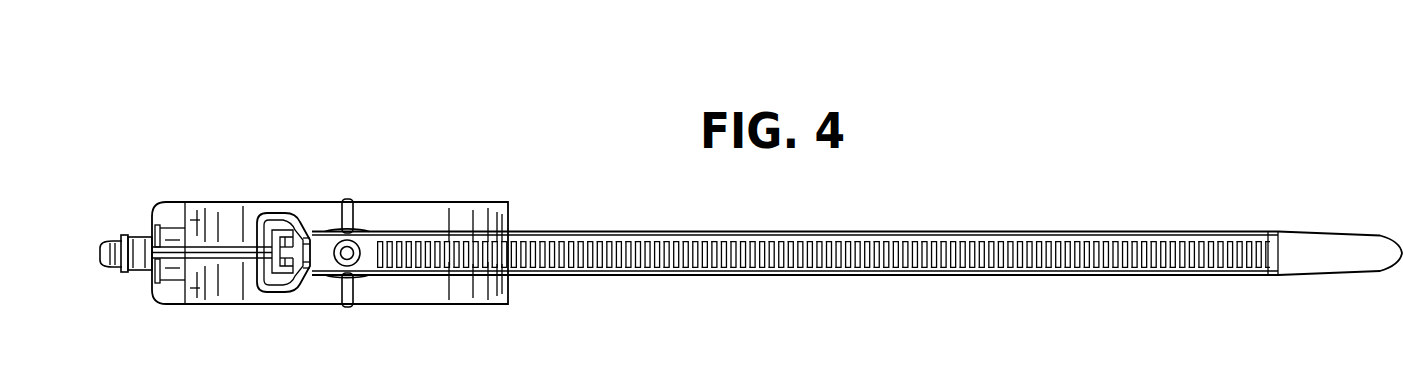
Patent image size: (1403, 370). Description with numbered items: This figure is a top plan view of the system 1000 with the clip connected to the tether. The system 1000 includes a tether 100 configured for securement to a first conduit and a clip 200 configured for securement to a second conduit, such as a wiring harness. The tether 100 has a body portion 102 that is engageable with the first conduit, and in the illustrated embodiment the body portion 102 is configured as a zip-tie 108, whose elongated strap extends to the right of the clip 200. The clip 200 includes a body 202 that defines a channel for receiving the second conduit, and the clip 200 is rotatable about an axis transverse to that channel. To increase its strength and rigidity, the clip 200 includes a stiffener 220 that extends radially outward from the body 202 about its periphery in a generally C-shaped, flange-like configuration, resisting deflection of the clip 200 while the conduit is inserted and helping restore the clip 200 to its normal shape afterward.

The system 1000 is at (445, 102).
The clip 200 is at (213, 142).
The body 202 is at (275, 194).
The stiffener 220 is at (214, 266).
The tether 100 is at (1042, 184).
The body portion 102 is at (864, 227).
The zip-tie 108 is at (937, 267).